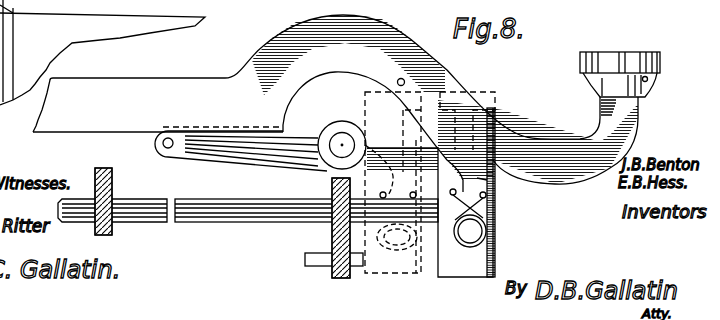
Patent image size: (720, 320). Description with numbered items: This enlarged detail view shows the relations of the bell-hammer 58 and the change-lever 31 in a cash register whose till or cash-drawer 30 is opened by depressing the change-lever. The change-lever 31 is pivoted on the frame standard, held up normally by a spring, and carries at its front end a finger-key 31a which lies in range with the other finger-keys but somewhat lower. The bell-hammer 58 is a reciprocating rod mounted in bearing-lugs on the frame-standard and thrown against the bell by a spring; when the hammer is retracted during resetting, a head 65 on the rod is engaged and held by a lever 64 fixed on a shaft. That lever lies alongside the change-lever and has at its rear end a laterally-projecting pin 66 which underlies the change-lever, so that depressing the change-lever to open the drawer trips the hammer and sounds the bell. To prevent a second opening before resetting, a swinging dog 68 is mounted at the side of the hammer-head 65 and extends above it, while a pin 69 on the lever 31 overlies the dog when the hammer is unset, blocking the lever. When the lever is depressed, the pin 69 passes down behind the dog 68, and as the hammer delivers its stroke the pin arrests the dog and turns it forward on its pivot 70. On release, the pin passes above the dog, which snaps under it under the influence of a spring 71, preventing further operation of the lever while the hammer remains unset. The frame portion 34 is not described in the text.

The till or cash-drawer 30 is at (27, 48).
The change-lever 31 is at (335, 103).
The finger-key 31a is at (648, 80).
The frame 34 is at (238, 4).
The bell-hammer 58 is at (230, 223).
The lever 64 is at (175, 178).
The head 65 is at (341, 132).
The laterally-projecting pin 66 is at (167, 149).
The swinging dog 68 is at (493, 178).
The pin 69 is at (404, 79).
The pivot 70 is at (470, 248).
The spring 71 is at (459, 214).